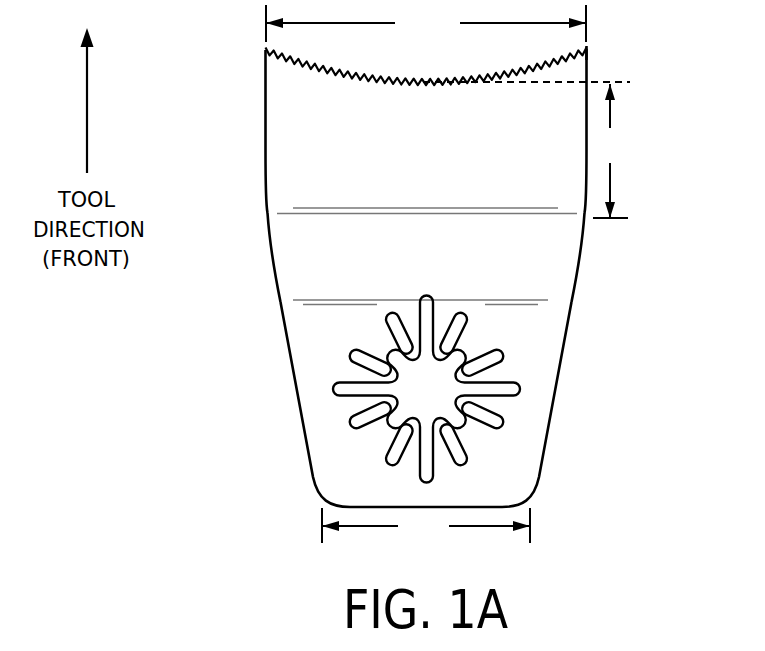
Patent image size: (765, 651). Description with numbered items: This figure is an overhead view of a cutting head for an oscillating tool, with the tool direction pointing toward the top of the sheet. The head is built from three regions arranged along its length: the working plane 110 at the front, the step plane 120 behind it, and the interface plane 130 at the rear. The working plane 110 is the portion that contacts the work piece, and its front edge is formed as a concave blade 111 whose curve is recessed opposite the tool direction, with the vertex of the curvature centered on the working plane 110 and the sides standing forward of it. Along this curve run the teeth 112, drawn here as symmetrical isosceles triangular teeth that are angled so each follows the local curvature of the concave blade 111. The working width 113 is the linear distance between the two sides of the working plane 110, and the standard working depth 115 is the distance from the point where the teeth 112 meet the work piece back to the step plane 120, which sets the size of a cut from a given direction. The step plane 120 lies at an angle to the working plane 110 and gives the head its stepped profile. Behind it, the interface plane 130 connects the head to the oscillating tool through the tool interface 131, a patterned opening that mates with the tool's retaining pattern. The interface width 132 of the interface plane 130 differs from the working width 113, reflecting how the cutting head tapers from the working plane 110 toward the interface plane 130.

The working plane 110 is at (278, 193).
The concave blade 111 is at (536, 60).
The teeth 112 is at (586, 48).
The working width 113 is at (426, 23).
The standard working depth 115 is at (526, 150).
The step plane 120 is at (285, 258).
The interface plane 130 is at (300, 360).
The tool interface 131 is at (490, 396).
The interface width 132 is at (426, 525).